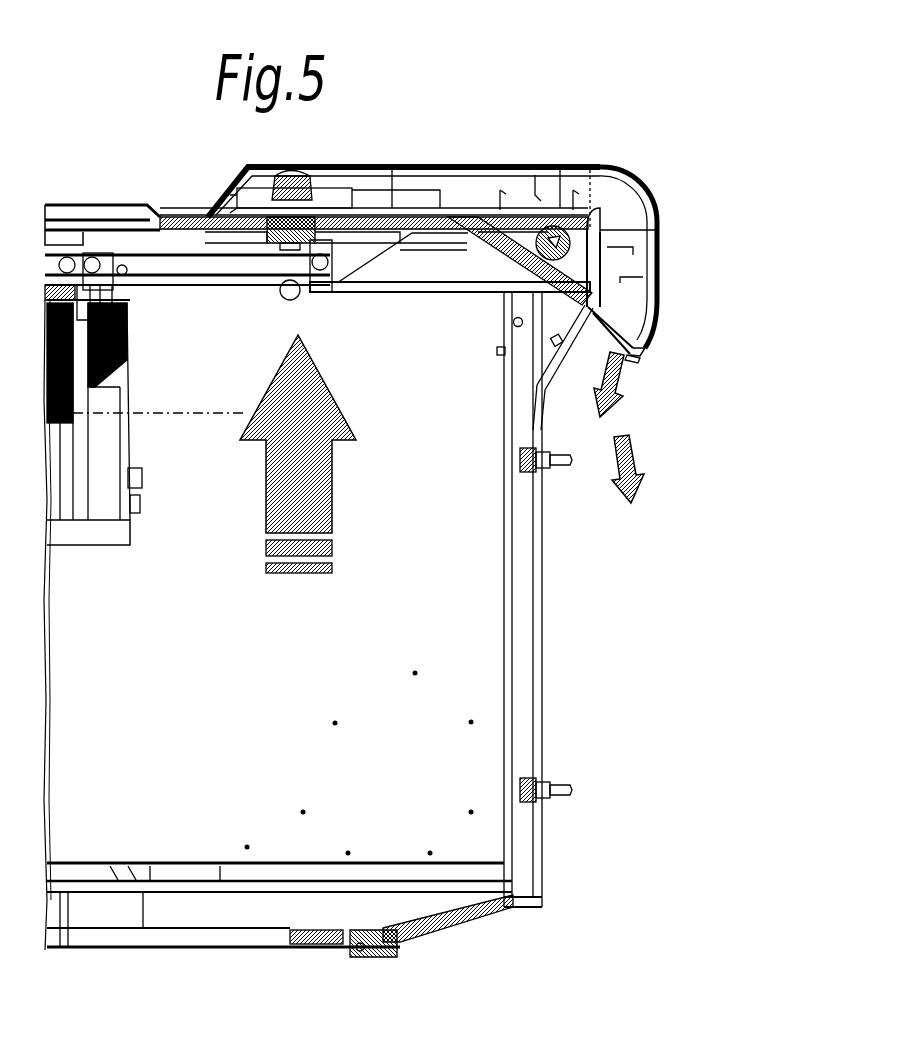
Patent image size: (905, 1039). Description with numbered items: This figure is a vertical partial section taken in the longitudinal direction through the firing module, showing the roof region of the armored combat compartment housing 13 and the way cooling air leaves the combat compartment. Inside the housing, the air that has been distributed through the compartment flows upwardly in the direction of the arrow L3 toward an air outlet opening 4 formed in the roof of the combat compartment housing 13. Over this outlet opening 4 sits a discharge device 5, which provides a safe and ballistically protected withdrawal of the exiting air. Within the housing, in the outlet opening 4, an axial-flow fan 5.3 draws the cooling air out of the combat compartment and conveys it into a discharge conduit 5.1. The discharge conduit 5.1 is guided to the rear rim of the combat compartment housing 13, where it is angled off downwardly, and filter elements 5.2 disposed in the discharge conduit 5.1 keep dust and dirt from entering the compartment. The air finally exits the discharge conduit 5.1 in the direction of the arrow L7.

The air outlet opening 4 is at (250, 228).
The discharge device 5 is at (427, 165).
The discharge conduit 5.1 is at (657, 200).
The filter elements 5.2 is at (537, 195).
The axial-flow fan 5.3 is at (357, 183).
The combat compartment housing 13 is at (485, 688).
The arrow L3 is at (337, 527).
The arrow L7 is at (620, 387).